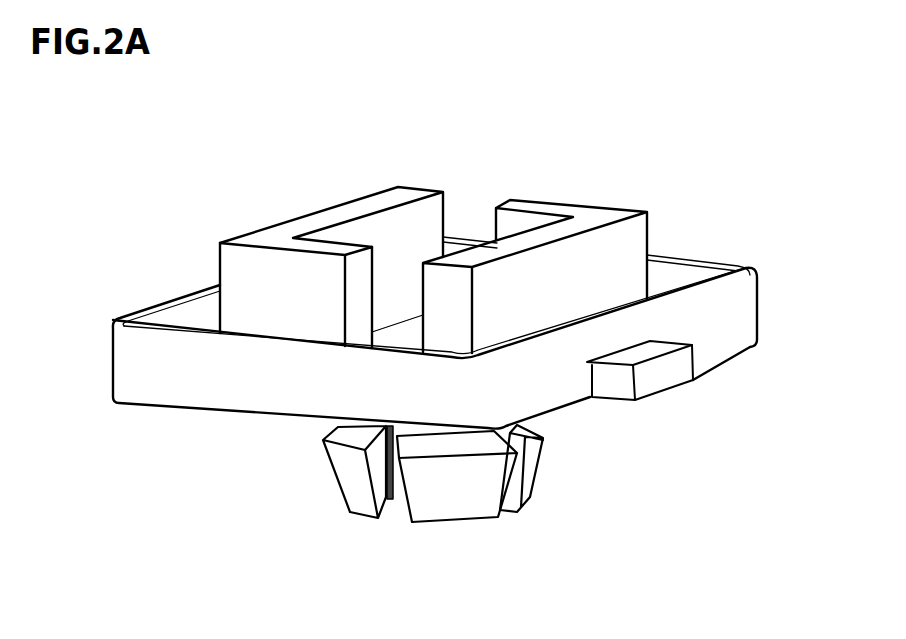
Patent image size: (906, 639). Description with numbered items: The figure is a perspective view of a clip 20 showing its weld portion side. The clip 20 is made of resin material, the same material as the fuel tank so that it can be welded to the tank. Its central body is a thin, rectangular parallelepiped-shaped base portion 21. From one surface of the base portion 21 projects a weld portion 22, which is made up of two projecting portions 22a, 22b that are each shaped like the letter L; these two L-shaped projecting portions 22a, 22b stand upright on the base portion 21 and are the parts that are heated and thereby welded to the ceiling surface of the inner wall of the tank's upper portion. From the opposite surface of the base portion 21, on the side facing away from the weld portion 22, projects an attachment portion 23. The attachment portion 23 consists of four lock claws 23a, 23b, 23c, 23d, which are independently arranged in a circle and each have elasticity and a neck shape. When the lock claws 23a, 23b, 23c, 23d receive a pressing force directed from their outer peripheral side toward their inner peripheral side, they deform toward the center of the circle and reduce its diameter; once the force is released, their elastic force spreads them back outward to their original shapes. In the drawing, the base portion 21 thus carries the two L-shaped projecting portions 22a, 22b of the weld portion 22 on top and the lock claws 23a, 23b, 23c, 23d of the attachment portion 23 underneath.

The clip 20 is at (587, 166).
The base portion 21 is at (737, 314).
The weld portion 22 is at (633, 204).
The projecting portion 22a is at (542, 208).
The projecting portion 22b is at (342, 217).
The attachment portion 23 is at (550, 462).
The lock claw 23a is at (528, 479).
The lock claw 23b is at (447, 492).
The lock claw 23c is at (348, 477).
The lock claw 23d is at (397, 489).